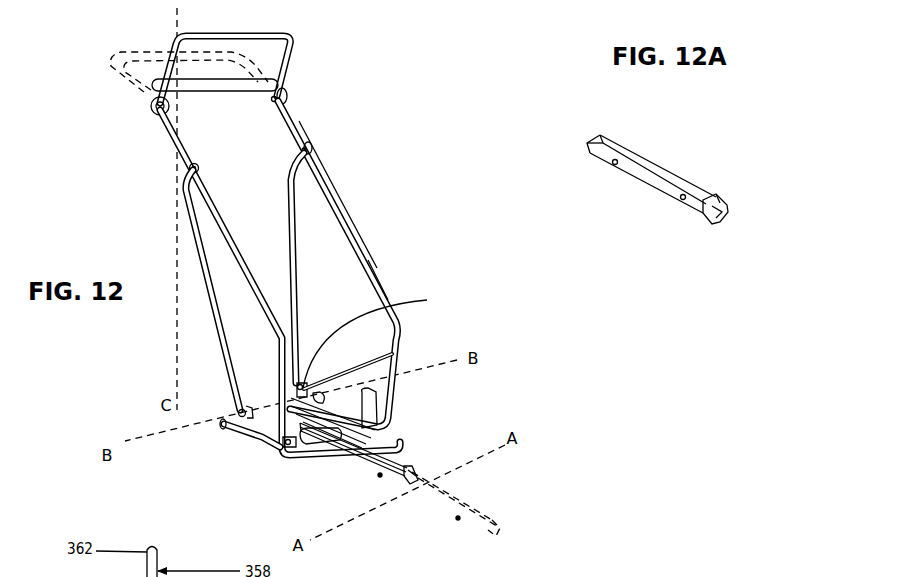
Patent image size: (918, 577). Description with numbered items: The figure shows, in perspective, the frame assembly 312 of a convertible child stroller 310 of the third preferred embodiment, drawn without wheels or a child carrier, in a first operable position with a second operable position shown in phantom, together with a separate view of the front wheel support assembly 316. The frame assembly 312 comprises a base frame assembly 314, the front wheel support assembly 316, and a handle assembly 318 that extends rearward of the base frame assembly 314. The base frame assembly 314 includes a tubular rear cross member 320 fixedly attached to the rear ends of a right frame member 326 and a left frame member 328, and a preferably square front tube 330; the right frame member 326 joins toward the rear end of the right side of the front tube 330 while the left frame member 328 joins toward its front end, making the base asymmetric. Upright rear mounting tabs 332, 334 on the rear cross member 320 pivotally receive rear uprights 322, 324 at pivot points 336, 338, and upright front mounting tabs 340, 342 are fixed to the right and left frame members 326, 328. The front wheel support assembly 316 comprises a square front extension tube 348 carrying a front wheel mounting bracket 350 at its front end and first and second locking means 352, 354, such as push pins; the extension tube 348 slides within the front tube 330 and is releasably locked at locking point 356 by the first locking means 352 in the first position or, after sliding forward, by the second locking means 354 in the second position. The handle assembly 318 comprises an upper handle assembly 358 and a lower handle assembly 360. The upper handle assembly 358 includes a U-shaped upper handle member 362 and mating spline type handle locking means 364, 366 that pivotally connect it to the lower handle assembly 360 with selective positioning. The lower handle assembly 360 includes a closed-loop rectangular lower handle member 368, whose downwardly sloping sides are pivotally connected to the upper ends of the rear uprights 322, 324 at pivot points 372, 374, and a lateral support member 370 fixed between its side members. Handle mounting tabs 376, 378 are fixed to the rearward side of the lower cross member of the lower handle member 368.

In FIG. 12, the stroller 310 is at (445, 160).
In FIG. 12, the frame assembly 312 is at (372, 256).
In FIG. 12, the base frame assembly 314 is at (250, 450).
In FIG. 12, the front wheel support assembly 316 is at (420, 471).
In FIG. 12A, the front wheel support assembly 316 is at (640, 150).
In FIG. 12, the handle assembly 318 is at (302, 126).
In FIG. 12, the rear cross member 320 is at (232, 432).
In FIG. 12, the rear upright 322 is at (221, 332).
In FIG. 12, the rear upright 324 is at (296, 213).
In FIG. 12, the right frame member 326 is at (263, 445).
In FIG. 12, the left frame member 328 is at (388, 454).
In FIG. 12, the front tube 330 is at (407, 466).
In FIG. 12, the rear mounting tab 332 is at (250, 405).
In FIG. 12, the rear mounting tab 334 is at (380, 338).
In FIG. 12, the pivot point 336 is at (236, 413).
In FIG. 12, the pivot point 338 is at (305, 387).
In FIG. 12, the front mounting tab 340 is at (290, 448).
In FIG. 12, the front mounting tab 342 is at (380, 414).
In FIG. 12, the front extension tube 348 is at (396, 488).
In FIG. 12A, the front extension tube 348 is at (660, 170).
In FIG. 12, the front wheel mounting bracket 350 is at (412, 500).
In FIG. 12A, the front wheel mounting bracket 350 is at (714, 226).
In FIG. 12, the first locking means 352 is at (458, 520).
In FIG. 12A, the first locking means 352 is at (682, 200).
In FIG. 12A, the second locking means 354 is at (613, 165).
In FIG. 12, the locking point 356 is at (379, 476).
In FIG. 12, the upper handle assembly 358 is at (300, 64).
In FIG. 12, the lower handle assembly 360 is at (355, 226).
In FIG. 12, the upper handle member 362 is at (230, 36).
In FIG. 12, the handle locking means 364 is at (157, 115).
In FIG. 12, the handle locking means 366 is at (285, 96).
In FIG. 12, the lower handle member 368 is at (378, 277).
In FIG. 12, the lateral support member 370 is at (246, 412).
In FIG. 12, the pivot point 372 is at (190, 170).
In FIG. 12, the pivot point 374 is at (312, 149).
In FIG. 12, the handle mounting tab 376 is at (300, 454).
In FIG. 12, the handle mounting tab 378 is at (246, 416).